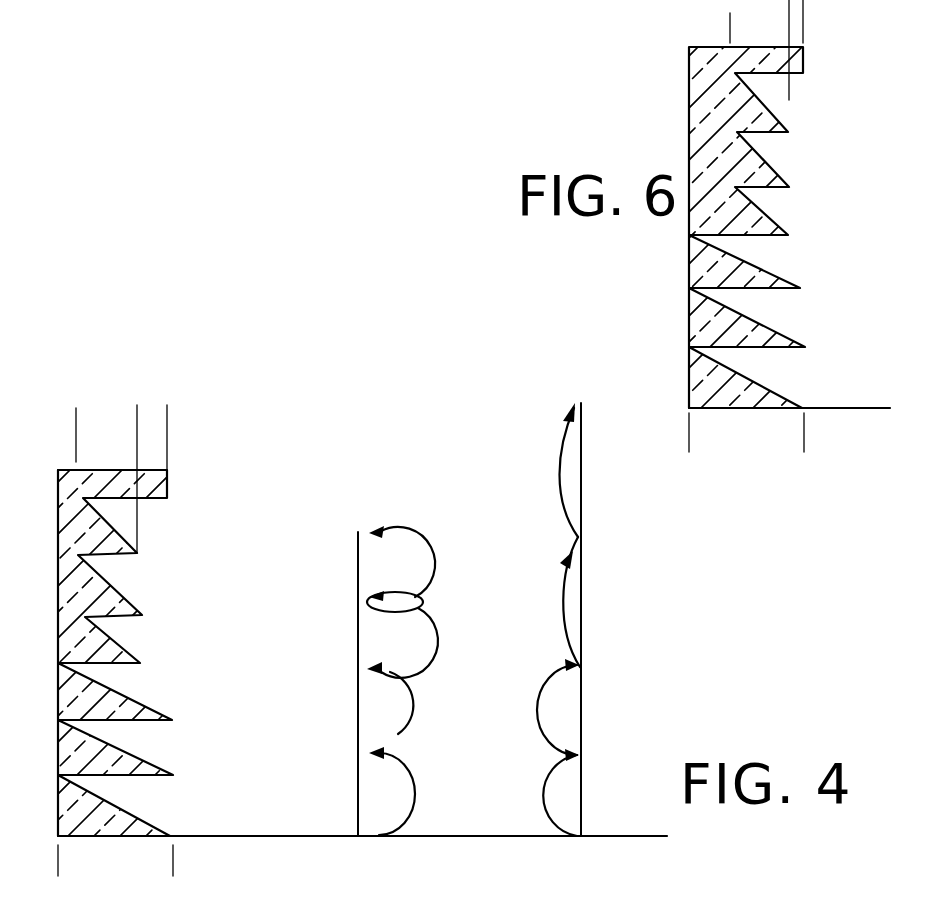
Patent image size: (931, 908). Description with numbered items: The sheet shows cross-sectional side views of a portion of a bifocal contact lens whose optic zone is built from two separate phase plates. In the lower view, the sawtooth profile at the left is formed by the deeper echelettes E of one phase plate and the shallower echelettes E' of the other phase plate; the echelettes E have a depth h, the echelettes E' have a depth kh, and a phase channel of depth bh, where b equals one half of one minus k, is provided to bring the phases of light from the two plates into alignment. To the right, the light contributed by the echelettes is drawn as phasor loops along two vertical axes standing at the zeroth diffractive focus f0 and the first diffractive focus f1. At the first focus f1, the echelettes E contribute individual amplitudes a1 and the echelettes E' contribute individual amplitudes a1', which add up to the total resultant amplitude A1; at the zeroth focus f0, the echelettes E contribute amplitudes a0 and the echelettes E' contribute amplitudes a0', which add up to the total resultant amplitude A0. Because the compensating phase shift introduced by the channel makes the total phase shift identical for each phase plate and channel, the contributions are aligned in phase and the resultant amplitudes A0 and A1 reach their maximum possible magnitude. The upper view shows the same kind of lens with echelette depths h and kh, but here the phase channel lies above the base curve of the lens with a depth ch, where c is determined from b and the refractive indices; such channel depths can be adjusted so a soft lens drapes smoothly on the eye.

In FIG. 4, the echelette E is at (274, 650).
In FIG. 6, the echelette E is at (628, 230).
In FIG. 4, the echelette E' is at (134, 566).
In FIG. 4, the echelette depth h is at (173, 858).
In FIG. 6, the echelette depth h is at (804, 435).
In FIG. 4, the echelette depth kh is at (137, 422).
In FIG. 6, the echelette depth kh is at (789, 25).
In FIG. 4, the phase channel depth bh is at (167, 422).
In FIG. 6, the phase channel depth ch is at (773, 12).
In FIG. 4, the total resultant amplitude A1 is at (358, 643).
In FIG. 4, the total resultant amplitude A0 is at (583, 612).
In FIG. 4, the individual amplitude of light a1 is at (419, 753).
In FIG. 4, the individual amplitude of light a1' is at (430, 602).
In FIG. 4, the individual amplitude of light a0 is at (533, 747).
In FIG. 4, the individual amplitude of light a0' is at (546, 535).
In FIG. 4, the first diffractive focus f1 is at (370, 865).
In FIG. 4, the zeroth diffractive focus f0 is at (590, 865).